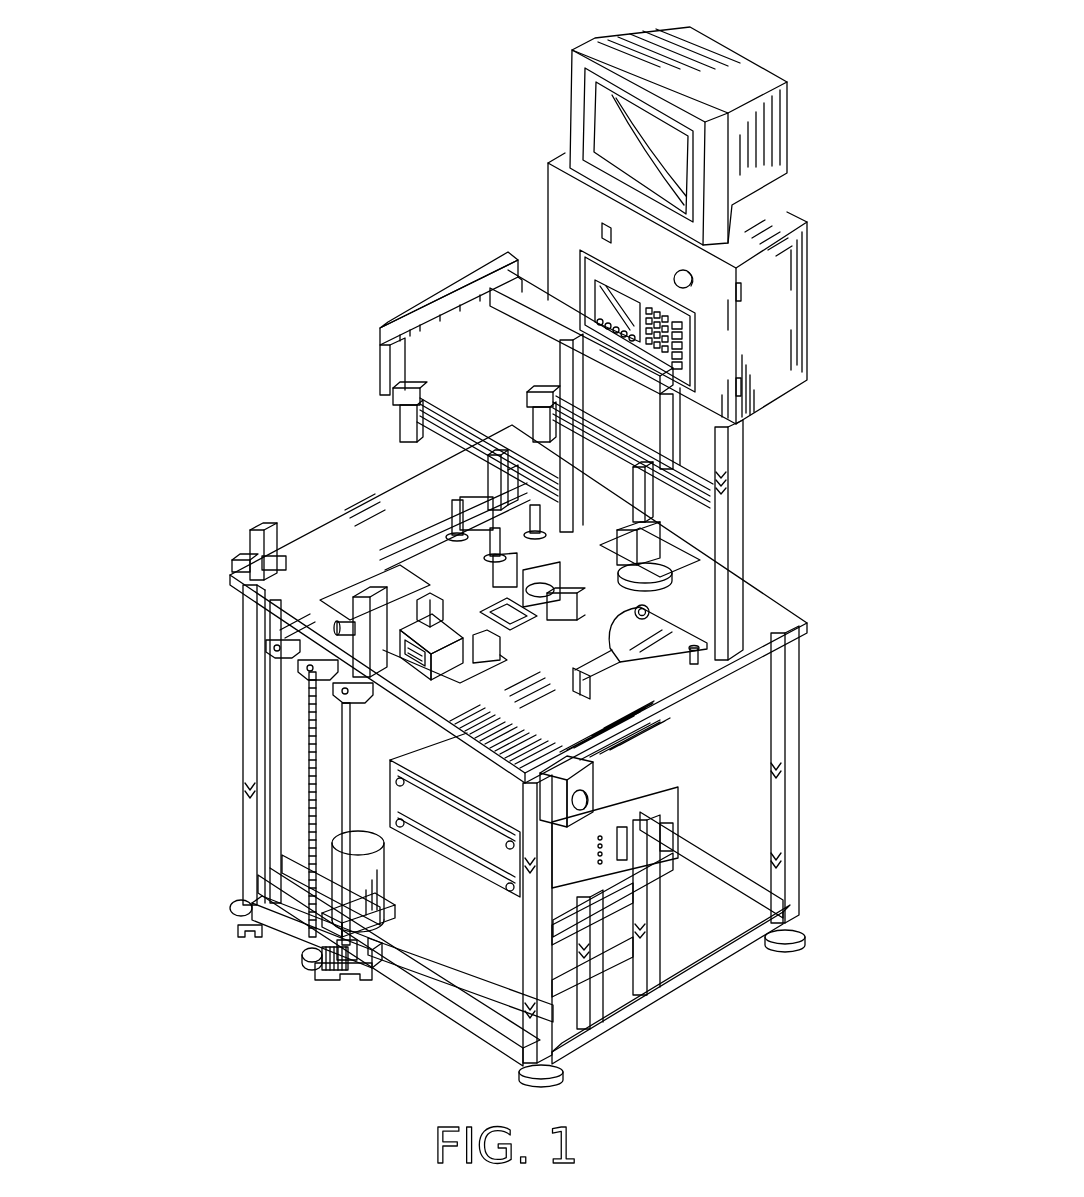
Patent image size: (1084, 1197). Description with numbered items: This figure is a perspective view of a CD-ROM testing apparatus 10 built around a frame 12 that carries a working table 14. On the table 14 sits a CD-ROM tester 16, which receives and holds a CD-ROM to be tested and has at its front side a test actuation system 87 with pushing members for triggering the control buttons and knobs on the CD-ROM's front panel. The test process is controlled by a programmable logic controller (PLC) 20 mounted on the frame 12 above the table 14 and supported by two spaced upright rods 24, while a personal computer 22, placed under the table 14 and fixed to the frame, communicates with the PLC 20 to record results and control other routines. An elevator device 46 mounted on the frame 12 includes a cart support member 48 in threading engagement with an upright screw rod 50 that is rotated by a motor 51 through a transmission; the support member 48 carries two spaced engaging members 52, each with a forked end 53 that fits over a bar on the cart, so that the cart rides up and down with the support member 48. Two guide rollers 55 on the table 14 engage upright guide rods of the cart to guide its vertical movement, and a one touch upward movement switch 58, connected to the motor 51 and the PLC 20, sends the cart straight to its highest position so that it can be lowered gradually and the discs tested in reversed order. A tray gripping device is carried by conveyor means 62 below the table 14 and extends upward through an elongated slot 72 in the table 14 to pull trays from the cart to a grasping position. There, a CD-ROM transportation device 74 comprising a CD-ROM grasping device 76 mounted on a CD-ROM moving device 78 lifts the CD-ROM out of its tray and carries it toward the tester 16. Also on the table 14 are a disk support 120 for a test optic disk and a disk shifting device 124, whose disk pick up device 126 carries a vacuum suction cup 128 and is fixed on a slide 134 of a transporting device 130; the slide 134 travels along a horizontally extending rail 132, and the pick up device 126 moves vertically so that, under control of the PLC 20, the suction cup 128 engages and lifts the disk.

The CD-ROM testing apparatus 10 is at (776, 56).
The programmable logic controller (PLC) 20 is at (819, 262).
The frame 12 is at (808, 707).
The working table 14 is at (775, 630).
The CD-ROM tester 16 is at (345, 690).
The personal computer 22 is at (677, 800).
The upright rods 24 is at (737, 602).
The elevator device 46 is at (273, 956).
The cart support member 48 is at (303, 950).
The screw rod 50 is at (306, 773).
The motor 51 is at (378, 920).
The engaging members 52 is at (240, 925).
The forked end 53 is at (328, 975).
The guide rollers 55 is at (232, 578).
The one touch upward movement switch 58 is at (590, 803).
The conveyor means 62 is at (285, 678).
The elongated slot 72 is at (335, 612).
The CD-ROM transportation device 74 is at (432, 444).
The CD-ROM grasping device 76 is at (470, 488).
The CD-ROM moving device 78 is at (453, 413).
The test actuation system 87 is at (420, 568).
The disk support 120 is at (657, 650).
The disk shifting device 124 is at (690, 541).
The disk pick up device 126 is at (679, 573).
The vacuum suction cup 128 is at (662, 585).
The transporting device 130 is at (685, 469).
The rail 132 is at (640, 440).
The slide 134 is at (643, 508).